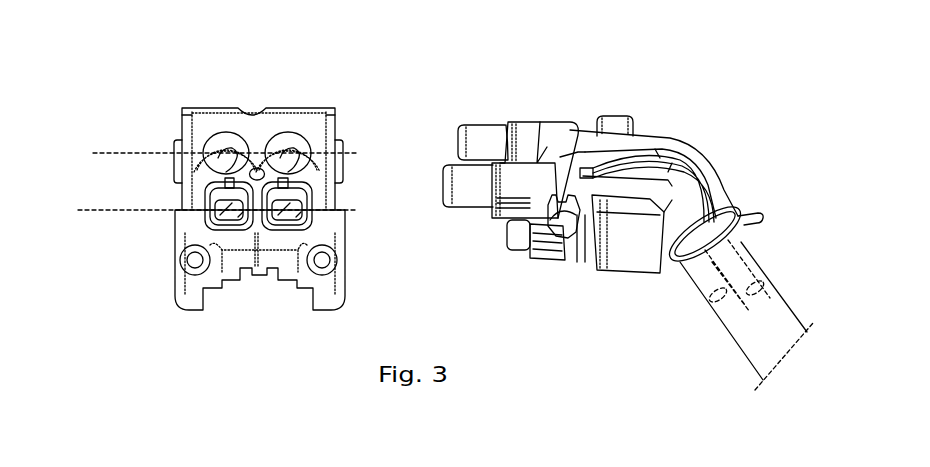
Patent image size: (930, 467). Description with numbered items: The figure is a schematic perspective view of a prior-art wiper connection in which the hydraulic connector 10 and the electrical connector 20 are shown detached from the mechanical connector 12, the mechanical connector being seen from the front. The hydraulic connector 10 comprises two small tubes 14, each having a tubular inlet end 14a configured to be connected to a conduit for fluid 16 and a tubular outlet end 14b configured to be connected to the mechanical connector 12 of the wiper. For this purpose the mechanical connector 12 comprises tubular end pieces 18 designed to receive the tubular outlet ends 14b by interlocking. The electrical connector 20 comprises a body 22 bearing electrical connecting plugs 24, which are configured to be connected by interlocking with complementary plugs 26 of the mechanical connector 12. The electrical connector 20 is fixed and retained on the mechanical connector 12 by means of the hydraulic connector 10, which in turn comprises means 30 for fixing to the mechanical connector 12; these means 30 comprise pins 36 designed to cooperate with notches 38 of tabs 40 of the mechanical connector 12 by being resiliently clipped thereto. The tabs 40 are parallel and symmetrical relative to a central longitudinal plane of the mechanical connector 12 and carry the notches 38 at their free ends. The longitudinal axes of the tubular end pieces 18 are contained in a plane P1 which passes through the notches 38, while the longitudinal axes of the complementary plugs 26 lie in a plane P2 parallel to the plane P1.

The hydraulic connector 10 is at (606, 208).
The mechanical connector 12 is at (238, 156).
The small tube 14 is at (598, 140).
The tubular inlet end 14a is at (722, 302).
The tubular outlet end 14b is at (455, 143).
The conduit for fluid 16 is at (740, 333).
The tubular end piece 18 is at (205, 147).
The electrical connector 20 is at (643, 278).
The body 22 is at (625, 270).
The electrical connecting plug 24 is at (505, 243).
The complementary plug 26 is at (205, 233).
The means for fixing the hydraulic connector to the mechanical connector 30 is at (585, 172).
The pin 36 is at (630, 116).
The notch 38 is at (176, 160).
The tab 40 is at (182, 116).
The plane P1 is at (93, 153).
The plane P2 is at (100, 211).